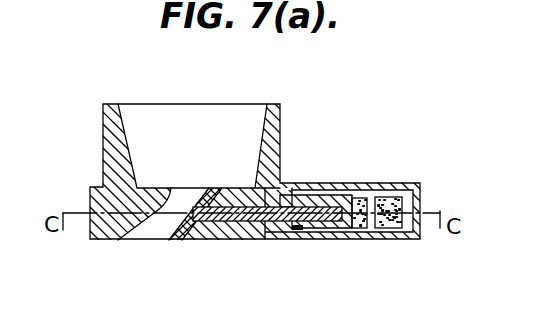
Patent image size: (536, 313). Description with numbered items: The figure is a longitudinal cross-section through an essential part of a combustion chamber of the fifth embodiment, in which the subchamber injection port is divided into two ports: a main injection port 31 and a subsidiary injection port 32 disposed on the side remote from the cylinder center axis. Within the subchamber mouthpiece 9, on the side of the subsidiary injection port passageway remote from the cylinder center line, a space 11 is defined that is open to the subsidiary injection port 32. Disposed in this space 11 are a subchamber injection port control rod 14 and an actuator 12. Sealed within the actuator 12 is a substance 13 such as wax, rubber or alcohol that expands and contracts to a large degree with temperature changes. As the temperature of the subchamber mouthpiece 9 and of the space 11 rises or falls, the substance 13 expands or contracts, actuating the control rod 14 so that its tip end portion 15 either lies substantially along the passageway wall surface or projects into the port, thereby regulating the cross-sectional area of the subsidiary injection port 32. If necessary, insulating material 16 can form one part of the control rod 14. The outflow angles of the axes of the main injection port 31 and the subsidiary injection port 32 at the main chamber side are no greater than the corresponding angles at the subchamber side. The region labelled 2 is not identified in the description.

The cup cavity 2 is at (248, 112).
The subchamber mouthpiece 9 is at (279, 125).
The main injection port 31 is at (134, 240).
The tip end portion 15 is at (175, 240).
The subsidiary injection port 32 is at (190, 240).
The subchamber injection port control rod 14 is at (232, 240).
The insulating material 16 is at (265, 240).
The actuator 12 is at (313, 240).
The space 11 is at (335, 240).
The substance 13 is at (380, 240).